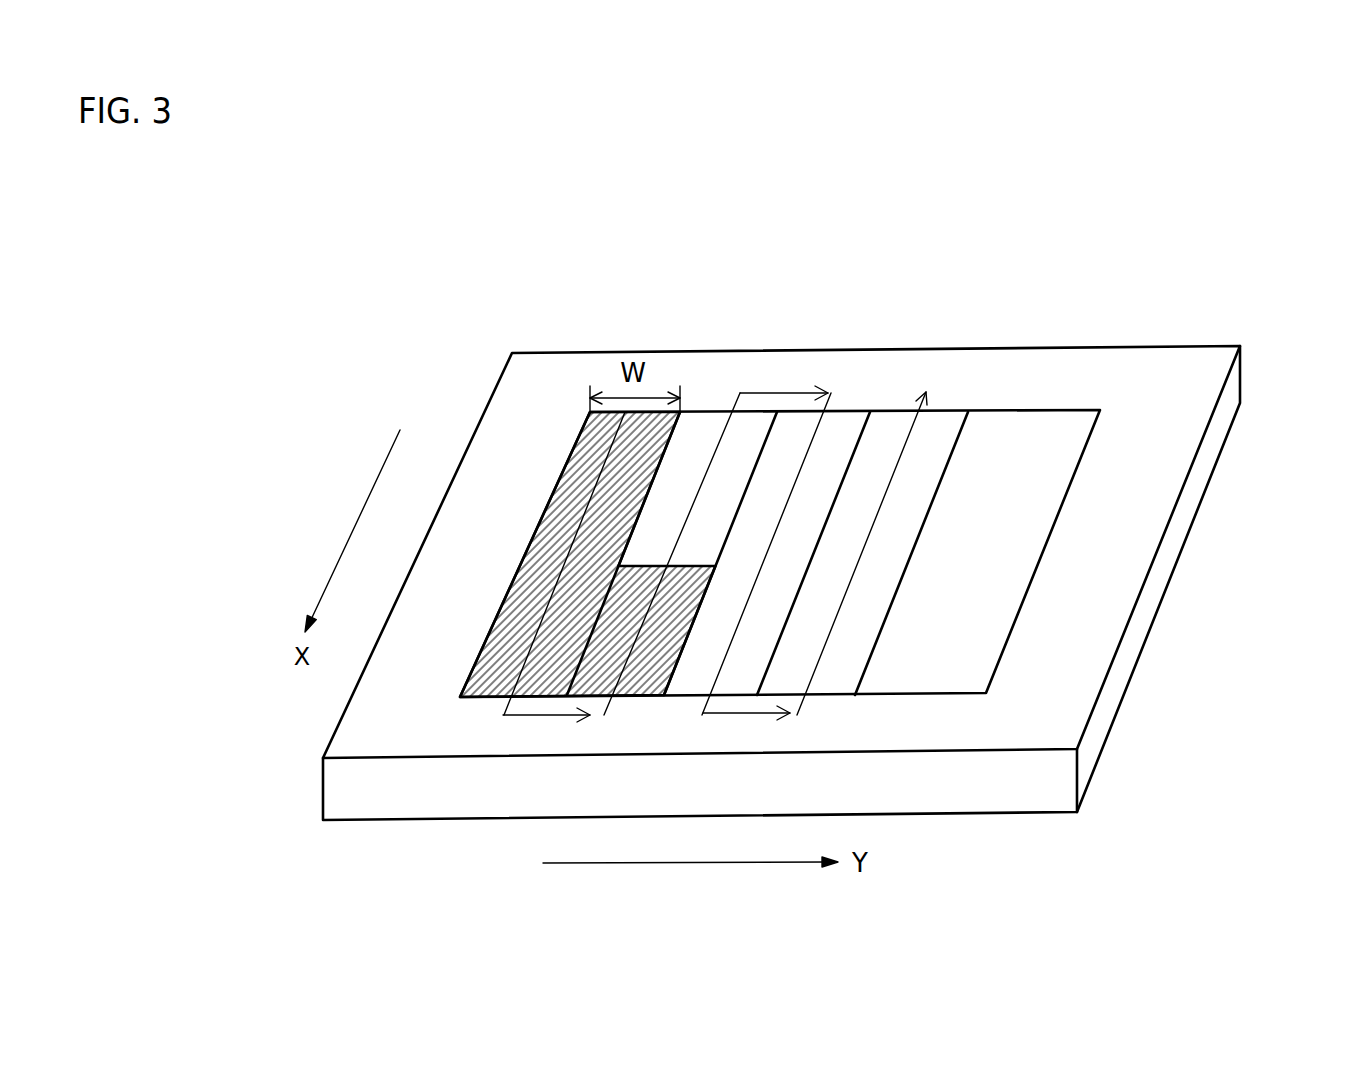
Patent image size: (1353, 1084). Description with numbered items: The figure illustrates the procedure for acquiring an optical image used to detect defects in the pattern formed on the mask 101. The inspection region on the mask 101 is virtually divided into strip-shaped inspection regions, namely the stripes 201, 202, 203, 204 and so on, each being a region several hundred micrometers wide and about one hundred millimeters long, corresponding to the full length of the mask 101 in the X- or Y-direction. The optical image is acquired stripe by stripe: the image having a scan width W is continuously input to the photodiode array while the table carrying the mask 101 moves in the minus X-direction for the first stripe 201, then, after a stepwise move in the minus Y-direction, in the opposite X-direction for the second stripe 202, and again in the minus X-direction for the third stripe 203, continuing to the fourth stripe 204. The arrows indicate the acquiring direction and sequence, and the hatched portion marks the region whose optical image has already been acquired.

The mask 101 is at (1182, 613).
The first stripe 201 is at (563, 512).
The second stripe 202 is at (672, 472).
The third stripe 203 is at (809, 472).
The fourth stripe 204 is at (926, 469).